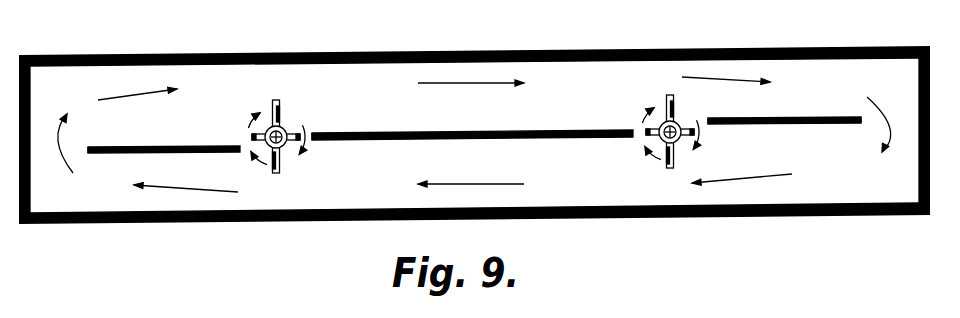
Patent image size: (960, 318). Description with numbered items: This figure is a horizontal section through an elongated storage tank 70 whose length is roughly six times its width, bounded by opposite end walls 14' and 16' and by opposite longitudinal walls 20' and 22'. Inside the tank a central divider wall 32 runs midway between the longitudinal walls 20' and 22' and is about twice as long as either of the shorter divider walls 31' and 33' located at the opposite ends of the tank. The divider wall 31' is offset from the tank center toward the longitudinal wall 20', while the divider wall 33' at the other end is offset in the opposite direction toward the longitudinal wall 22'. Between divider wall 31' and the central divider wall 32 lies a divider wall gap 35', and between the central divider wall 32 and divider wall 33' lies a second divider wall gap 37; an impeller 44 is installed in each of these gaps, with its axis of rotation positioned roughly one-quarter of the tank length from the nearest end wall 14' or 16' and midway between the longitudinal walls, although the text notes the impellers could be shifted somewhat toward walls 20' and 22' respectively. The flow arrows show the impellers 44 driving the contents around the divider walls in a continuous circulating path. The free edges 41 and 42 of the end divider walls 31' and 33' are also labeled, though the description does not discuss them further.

The tank 70 is at (583, 48).
The longitudinal wall 22' is at (474, 75).
The longitudinal wall 20' is at (474, 194).
The end wall 14' is at (55, 139).
The end wall 16' is at (890, 130).
The divider wall 31' is at (164, 134).
The central divider wall 32 is at (403, 134).
The divider wall 33' is at (784, 105).
The divider wall gap 35' is at (332, 148).
The divider wall gap 37 is at (706, 124).
The free edge of first baffle plate 41 is at (88, 153).
The free edge of third baffle plate 42 is at (861, 121).
The impeller 44 is at (284, 125).